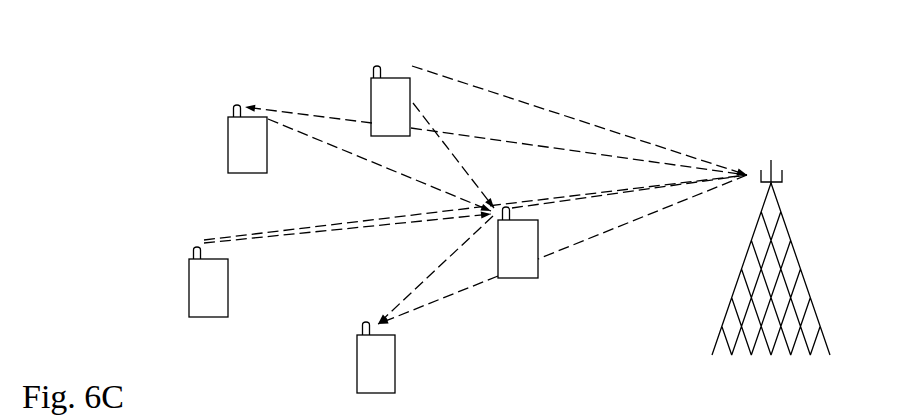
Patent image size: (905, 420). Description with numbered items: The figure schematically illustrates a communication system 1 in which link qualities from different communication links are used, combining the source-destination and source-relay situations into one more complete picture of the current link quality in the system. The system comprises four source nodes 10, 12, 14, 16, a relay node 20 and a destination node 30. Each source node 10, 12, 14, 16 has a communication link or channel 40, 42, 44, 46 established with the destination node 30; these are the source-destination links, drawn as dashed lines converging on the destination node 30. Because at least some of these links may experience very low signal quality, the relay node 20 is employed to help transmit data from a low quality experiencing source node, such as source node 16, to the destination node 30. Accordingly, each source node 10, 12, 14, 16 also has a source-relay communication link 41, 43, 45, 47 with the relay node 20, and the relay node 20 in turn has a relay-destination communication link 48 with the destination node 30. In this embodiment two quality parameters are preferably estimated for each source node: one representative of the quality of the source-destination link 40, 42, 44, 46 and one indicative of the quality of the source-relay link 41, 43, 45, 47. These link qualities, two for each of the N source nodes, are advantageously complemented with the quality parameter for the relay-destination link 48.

The communication system 1 is at (100, 70).
The source node 10 is at (371, 111).
The source node 12 is at (228, 150).
The source node 14 is at (189, 292).
The source node 16 is at (357, 366).
The relay node 20 is at (498, 252).
The destination node 30 is at (712, 355).
The communication link 40 is at (569, 120).
The communication link 41 is at (457, 158).
The communication link 42 is at (488, 137).
The communication link 43 is at (380, 166).
The communication link 44 is at (318, 222).
The communication link 45 is at (320, 230).
The communication link 46 is at (560, 251).
The communication link 47 is at (426, 278).
The communication link 48 is at (595, 194).